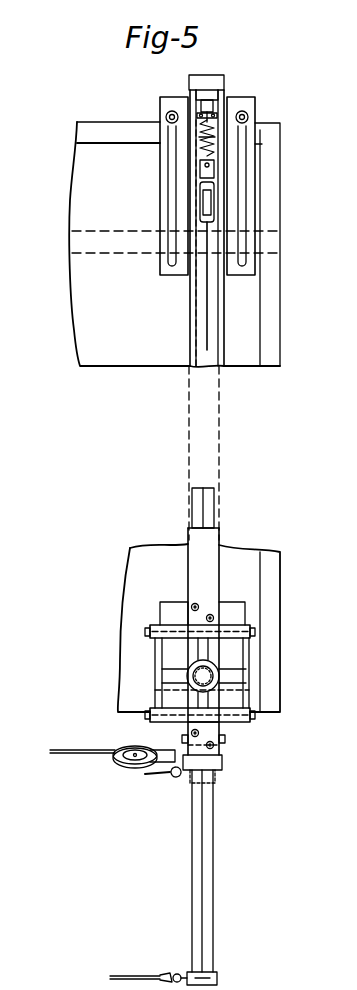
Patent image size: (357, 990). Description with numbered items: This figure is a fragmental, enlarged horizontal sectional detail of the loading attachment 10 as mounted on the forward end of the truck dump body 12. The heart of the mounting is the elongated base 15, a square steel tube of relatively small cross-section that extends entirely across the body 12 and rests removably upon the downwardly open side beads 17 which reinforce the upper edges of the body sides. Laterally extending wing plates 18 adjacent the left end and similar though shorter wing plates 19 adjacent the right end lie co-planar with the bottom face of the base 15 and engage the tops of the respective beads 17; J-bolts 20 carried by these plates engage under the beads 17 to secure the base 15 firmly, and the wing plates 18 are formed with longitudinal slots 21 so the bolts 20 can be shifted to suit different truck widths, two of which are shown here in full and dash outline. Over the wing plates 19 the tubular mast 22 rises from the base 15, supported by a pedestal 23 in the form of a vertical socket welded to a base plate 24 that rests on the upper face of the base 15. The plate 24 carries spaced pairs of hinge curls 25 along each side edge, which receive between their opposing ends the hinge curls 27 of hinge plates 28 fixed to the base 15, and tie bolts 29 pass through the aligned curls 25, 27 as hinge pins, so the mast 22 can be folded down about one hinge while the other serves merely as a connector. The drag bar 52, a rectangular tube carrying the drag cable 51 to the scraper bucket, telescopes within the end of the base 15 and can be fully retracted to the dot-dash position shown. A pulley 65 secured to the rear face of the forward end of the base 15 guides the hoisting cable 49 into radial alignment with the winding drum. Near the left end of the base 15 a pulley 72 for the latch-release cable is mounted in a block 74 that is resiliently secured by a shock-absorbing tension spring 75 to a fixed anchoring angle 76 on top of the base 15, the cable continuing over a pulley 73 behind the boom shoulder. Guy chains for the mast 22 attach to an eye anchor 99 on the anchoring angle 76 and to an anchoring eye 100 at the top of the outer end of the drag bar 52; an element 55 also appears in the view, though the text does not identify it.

The loading attachment 10 is at (224, 535).
The dump body 12 is at (105, 366).
The base 15 is at (190, 330).
The side beads 17 is at (96, 143).
The wing plates 18 is at (166, 276).
The wing plates 19 is at (164, 604).
The J-bolts 20 is at (166, 117).
The longitudinal slots 21 is at (170, 182).
The mast 22 is at (220, 670).
The pedestal 23 is at (187, 664).
The base plate 24 is at (244, 655).
The hinge curls 25 is at (237, 630).
The hinge curls 27 is at (216, 622).
The hinge plates 28 is at (200, 606).
The tie bolts 29 is at (255, 633).
The hoisting cable 49 is at (62, 752).
The drag cable 51 is at (150, 774).
The drag bar 52 is at (212, 488).
The block 55 is at (182, 742).
The pulley 65 is at (138, 770).
The pulley 72 is at (211, 200).
The pulley 73 is at (216, 175).
The block 74 is at (205, 168).
The tension spring 75 is at (208, 137).
The anchoring angle 76 is at (225, 117).
The eye anchor 99 is at (212, 105).
The anchoring eye 100 is at (222, 787).